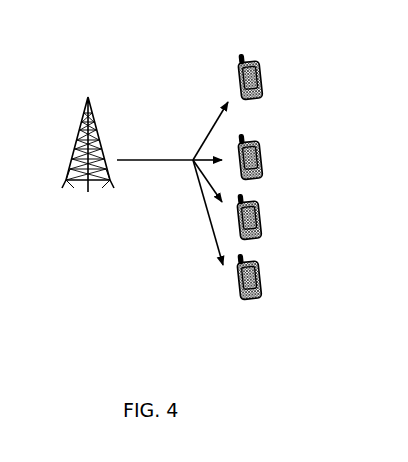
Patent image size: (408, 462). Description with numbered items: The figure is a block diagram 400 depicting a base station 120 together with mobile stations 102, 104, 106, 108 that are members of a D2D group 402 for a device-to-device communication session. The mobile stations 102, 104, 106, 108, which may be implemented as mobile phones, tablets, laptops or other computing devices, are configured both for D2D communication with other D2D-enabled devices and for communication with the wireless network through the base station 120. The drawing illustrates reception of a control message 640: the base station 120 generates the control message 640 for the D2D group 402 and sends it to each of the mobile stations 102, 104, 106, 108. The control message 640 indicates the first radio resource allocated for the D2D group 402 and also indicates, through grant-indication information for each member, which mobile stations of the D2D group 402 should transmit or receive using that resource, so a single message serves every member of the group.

The base station 120 is at (67, 180).
The control message 640 is at (170, 162).
The mobile station 108 is at (262, 70).
The mobile station 106 is at (262, 148).
The mobile station 104 is at (261, 208).
The mobile station 102 is at (261, 268).
The block diagram 400 is at (77, 313).
The D2D group 402 is at (243, 322).